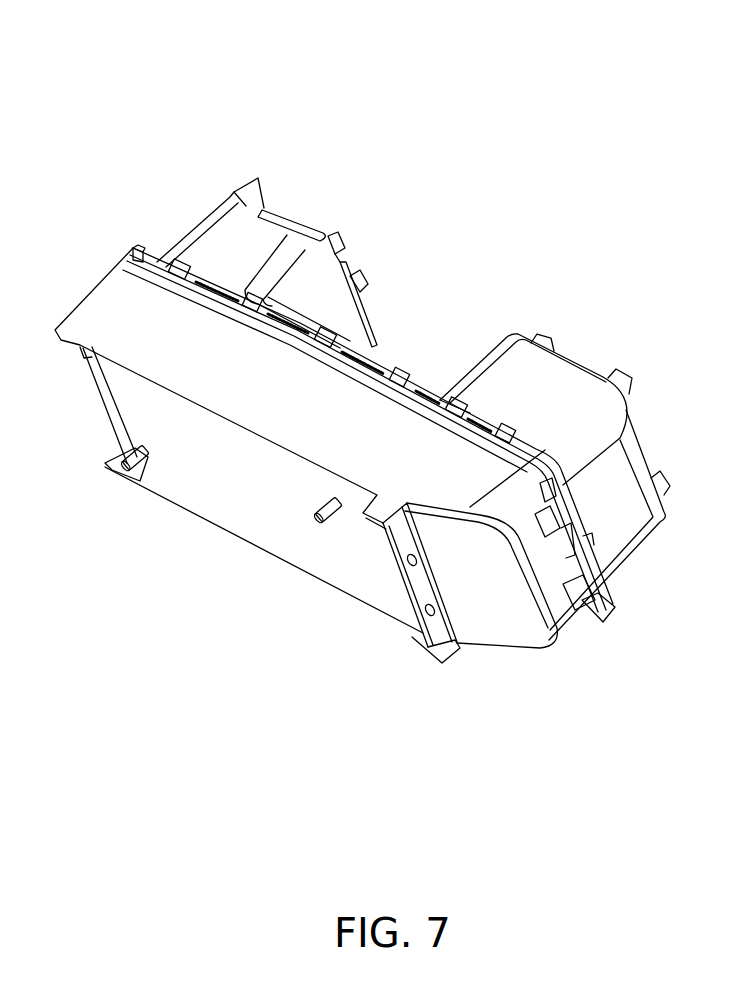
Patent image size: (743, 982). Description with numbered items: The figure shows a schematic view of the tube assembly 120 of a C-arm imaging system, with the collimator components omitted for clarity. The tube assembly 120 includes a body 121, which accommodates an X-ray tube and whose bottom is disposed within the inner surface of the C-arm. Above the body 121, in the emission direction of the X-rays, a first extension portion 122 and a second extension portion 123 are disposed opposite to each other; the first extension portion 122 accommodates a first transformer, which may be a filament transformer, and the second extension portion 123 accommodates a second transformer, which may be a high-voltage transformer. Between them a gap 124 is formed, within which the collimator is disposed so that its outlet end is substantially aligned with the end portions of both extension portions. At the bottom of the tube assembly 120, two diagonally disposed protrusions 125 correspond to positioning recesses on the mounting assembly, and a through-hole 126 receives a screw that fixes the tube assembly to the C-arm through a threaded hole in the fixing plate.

The tube assembly 120 is at (176, 86).
The body 121 is at (112, 318).
The first extension portion 122 is at (244, 235).
The second extension portion 123 is at (536, 388).
The gap 124 is at (403, 337).
The protrusion 125 is at (139, 485).
The through-hole 126 is at (443, 665).